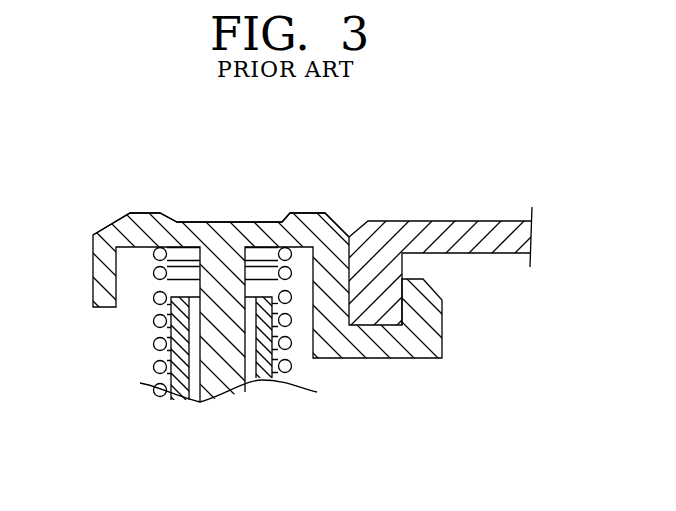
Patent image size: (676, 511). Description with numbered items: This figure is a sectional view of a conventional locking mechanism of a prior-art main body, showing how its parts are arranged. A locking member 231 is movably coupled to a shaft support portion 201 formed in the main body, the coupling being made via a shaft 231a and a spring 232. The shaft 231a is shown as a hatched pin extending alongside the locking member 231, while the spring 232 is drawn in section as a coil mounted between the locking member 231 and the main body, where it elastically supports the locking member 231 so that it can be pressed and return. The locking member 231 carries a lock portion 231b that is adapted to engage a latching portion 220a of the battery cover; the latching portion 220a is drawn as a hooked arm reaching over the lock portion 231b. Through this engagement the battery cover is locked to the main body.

The shaft support portion 201 is at (262, 262).
The latching portion 220a is at (453, 235).
The locking member 231 is at (225, 232).
The shaft 231a is at (214, 340).
The lock portion 231b is at (432, 332).
The spring 232 is at (160, 268).